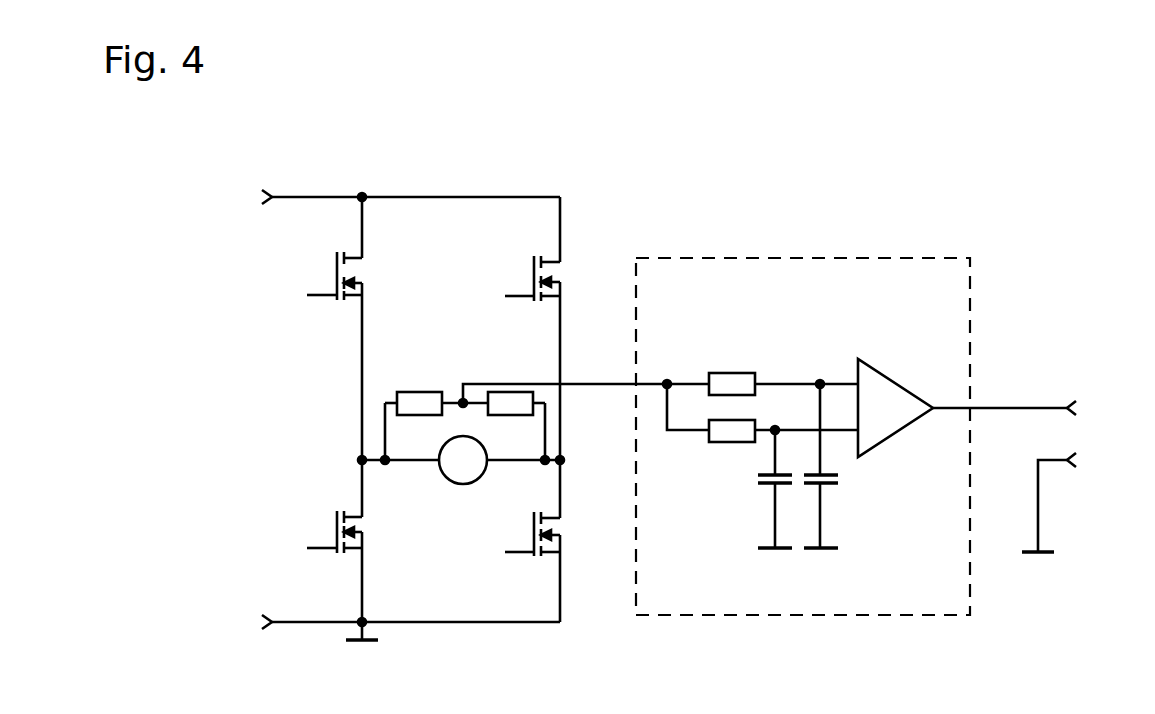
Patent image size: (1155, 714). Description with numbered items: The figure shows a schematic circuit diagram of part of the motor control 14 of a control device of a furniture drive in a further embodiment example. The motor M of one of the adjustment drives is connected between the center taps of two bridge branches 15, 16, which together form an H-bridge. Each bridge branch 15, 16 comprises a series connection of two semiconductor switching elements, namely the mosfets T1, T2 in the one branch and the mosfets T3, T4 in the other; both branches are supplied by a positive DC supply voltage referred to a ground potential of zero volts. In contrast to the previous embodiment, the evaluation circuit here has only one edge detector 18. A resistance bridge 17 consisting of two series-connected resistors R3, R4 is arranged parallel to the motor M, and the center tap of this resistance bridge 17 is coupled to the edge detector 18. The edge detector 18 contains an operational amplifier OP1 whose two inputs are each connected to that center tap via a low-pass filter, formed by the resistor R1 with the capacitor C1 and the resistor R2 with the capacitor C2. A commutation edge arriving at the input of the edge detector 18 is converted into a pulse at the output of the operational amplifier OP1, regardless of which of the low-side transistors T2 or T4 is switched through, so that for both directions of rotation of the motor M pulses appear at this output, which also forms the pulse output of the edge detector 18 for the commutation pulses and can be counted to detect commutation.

The motor control 14 is at (718, 168).
The bridge branch 15 is at (408, 177).
The bridge branch 16 is at (597, 180).
The resistance bridge 17 is at (395, 337).
The edge detector 18 is at (826, 257).
The mosfet T1 is at (335, 294).
The mosfet T2 is at (335, 516).
The mosfet T3 is at (545, 256).
The mosfet T4 is at (530, 555).
The resistor R1 is at (745, 372).
The resistor R2 is at (740, 443).
The resistor R3 is at (411, 390).
The resistor R4 is at (508, 390).
The capacitor C1 is at (830, 487).
The capacitor C2 is at (770, 487).
The operational amplifier OP1 is at (883, 370).
The motor M is at (463, 460).